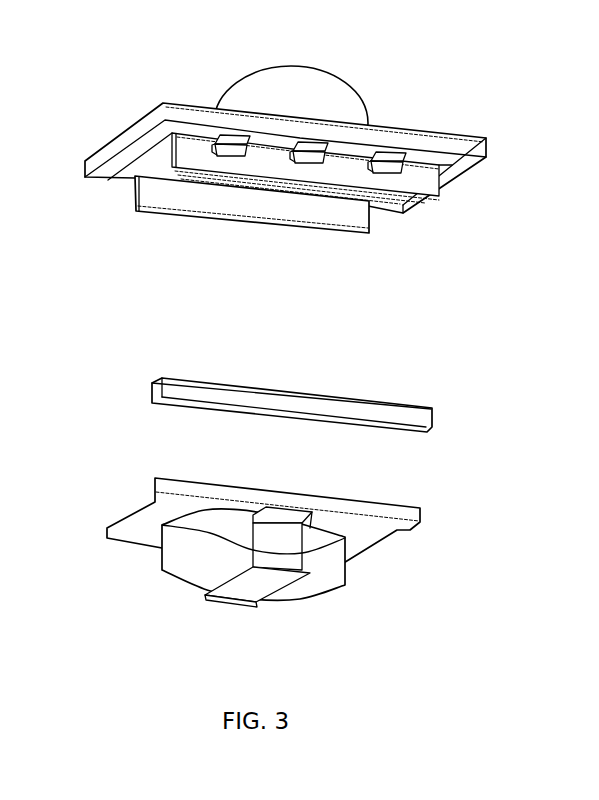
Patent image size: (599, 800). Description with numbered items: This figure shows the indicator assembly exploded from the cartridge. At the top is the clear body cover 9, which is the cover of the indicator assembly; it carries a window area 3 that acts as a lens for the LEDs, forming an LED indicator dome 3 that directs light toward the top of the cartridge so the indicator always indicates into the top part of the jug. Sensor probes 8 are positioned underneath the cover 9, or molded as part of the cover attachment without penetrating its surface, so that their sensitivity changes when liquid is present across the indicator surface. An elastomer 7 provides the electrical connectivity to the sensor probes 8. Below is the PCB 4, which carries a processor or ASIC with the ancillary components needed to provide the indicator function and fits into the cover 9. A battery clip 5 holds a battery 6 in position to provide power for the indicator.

The window area 3 is at (258, 85).
The PCB 4 is at (150, 483).
The battery clip 5 is at (205, 598).
The battery 6 is at (170, 540).
The elastomer 7 is at (418, 405).
The sensor probes 8 is at (397, 152).
The clear body cover 9 is at (90, 161).